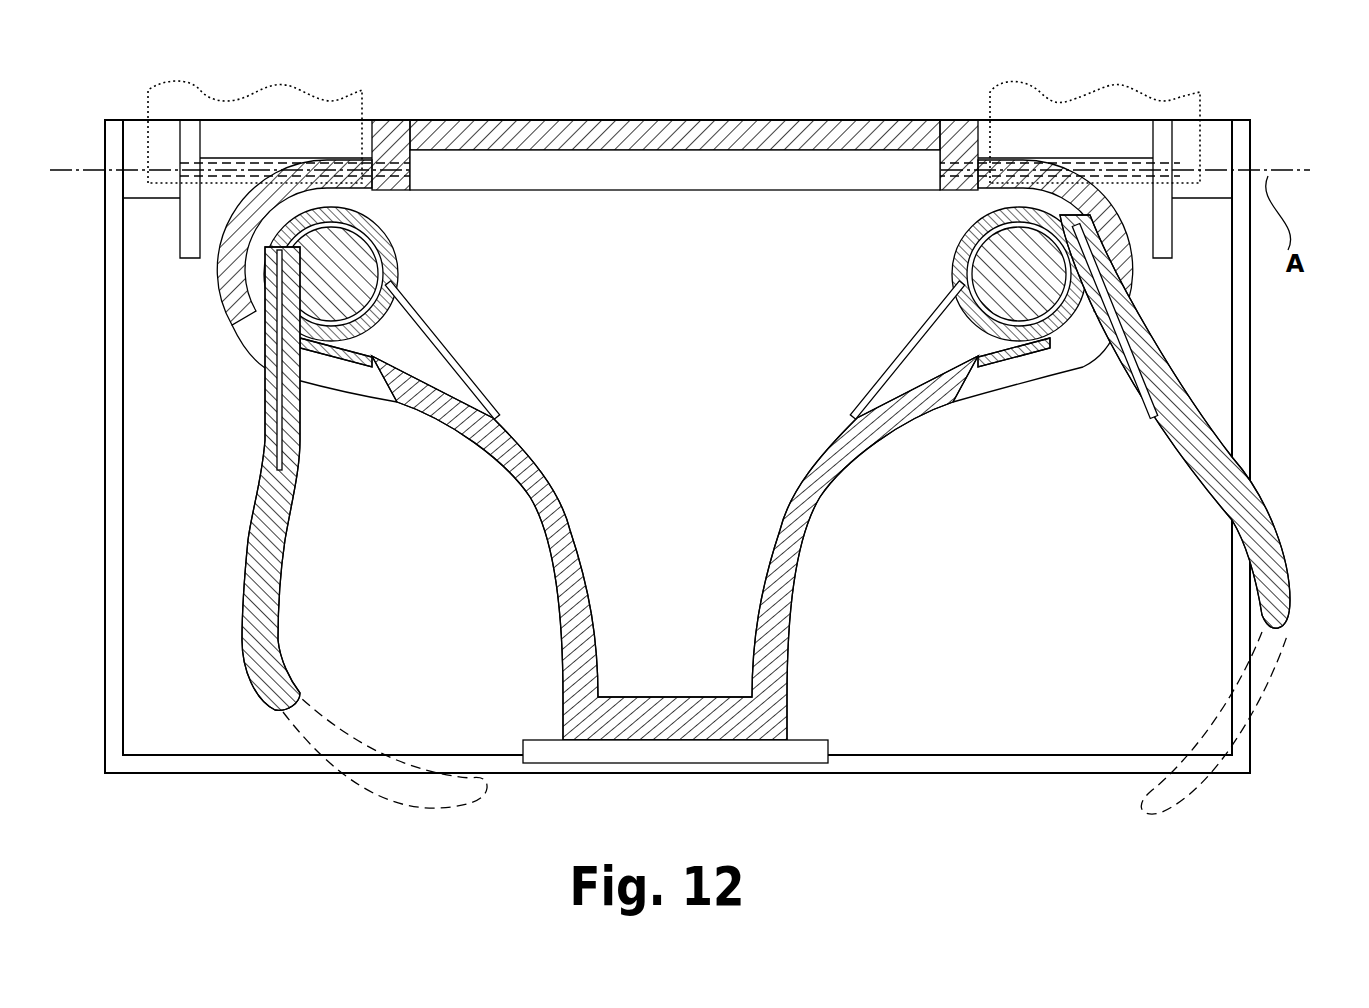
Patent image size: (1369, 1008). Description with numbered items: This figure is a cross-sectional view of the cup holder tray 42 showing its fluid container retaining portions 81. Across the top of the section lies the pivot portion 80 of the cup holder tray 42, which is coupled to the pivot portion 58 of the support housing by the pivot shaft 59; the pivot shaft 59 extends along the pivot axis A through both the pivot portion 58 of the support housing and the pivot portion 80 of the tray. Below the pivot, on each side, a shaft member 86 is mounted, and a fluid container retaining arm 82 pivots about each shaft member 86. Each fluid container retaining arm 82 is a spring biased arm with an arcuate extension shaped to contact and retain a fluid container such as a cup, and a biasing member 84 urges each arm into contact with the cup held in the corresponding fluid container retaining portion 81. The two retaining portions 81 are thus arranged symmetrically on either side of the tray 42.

The cup holder tray 42 is at (790, 781).
The pivot portion 58 is at (233, 90).
The pivot shaft 59 is at (525, 158).
The pivot portion 80 is at (656, 156).
The fluid container retaining portion 81 is at (465, 677).
The fluid container retaining arm 82 is at (1237, 494).
The biasing member 84 is at (437, 328).
The shaft member 86 is at (350, 277).